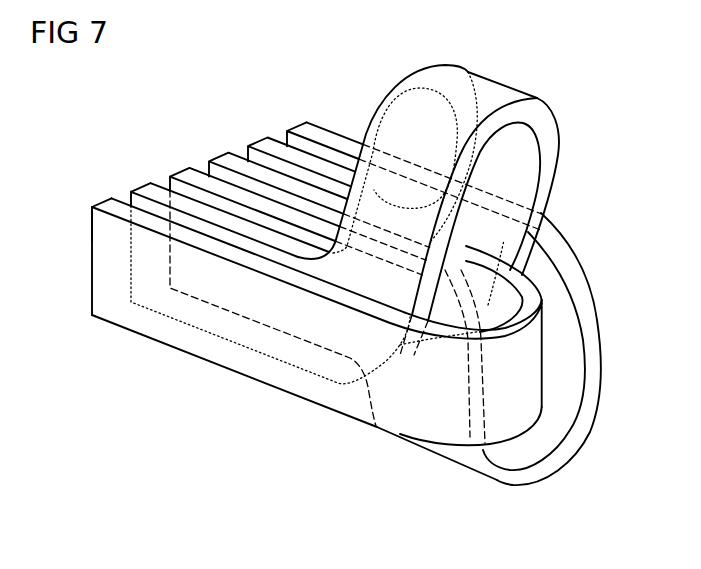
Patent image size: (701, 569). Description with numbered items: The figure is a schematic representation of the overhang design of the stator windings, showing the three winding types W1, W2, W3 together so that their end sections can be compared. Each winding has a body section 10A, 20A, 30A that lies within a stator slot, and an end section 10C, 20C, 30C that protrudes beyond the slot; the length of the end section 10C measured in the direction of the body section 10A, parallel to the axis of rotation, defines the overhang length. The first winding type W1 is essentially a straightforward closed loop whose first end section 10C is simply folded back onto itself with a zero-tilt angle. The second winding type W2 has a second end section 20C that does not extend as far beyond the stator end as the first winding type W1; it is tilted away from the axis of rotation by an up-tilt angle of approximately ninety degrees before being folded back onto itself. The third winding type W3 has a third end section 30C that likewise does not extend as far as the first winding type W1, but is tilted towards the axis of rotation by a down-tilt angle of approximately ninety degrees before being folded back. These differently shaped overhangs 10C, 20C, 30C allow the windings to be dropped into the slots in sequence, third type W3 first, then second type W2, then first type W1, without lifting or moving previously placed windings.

The body section 10A is at (93, 200).
The body section 20A is at (137, 184).
The body section 30A is at (180, 167).
The first end section 10C is at (523, 362).
The second end section 20C is at (495, 88).
The third end section 30C is at (462, 455).
The first winding type W1 is at (253, 365).
The second winding type W2 is at (392, 100).
The third winding type W3 is at (427, 450).